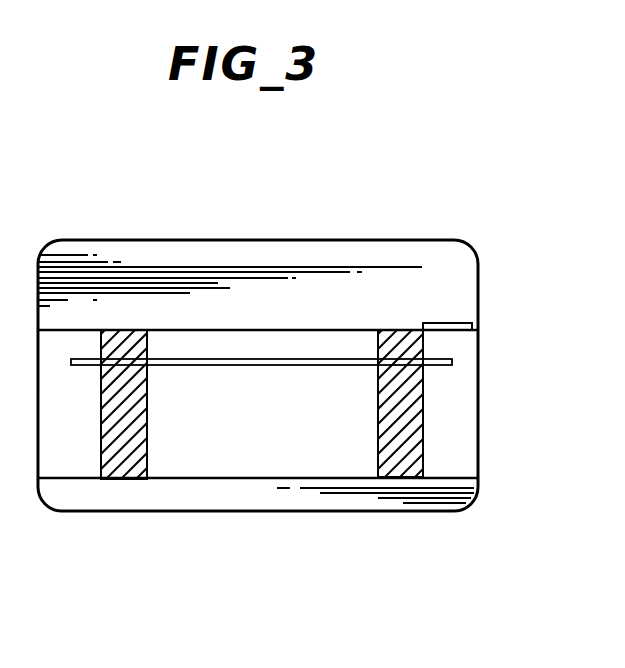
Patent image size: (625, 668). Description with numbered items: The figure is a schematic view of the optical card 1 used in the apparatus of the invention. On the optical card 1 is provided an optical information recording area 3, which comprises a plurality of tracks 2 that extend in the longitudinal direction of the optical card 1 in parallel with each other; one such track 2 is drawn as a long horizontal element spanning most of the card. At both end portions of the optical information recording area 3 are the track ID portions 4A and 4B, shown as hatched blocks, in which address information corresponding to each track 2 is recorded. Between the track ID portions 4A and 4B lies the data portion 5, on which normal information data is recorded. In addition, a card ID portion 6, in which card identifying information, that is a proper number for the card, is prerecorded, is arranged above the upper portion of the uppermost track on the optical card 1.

The optical card 1 is at (240, 511).
The track 2 is at (265, 358).
The optical information recording area 3 is at (497, 322).
The track ID portion 4A is at (125, 450).
The track ID portion 4B is at (405, 447).
The data portion 5 is at (310, 440).
The card ID portion 6 is at (453, 322).